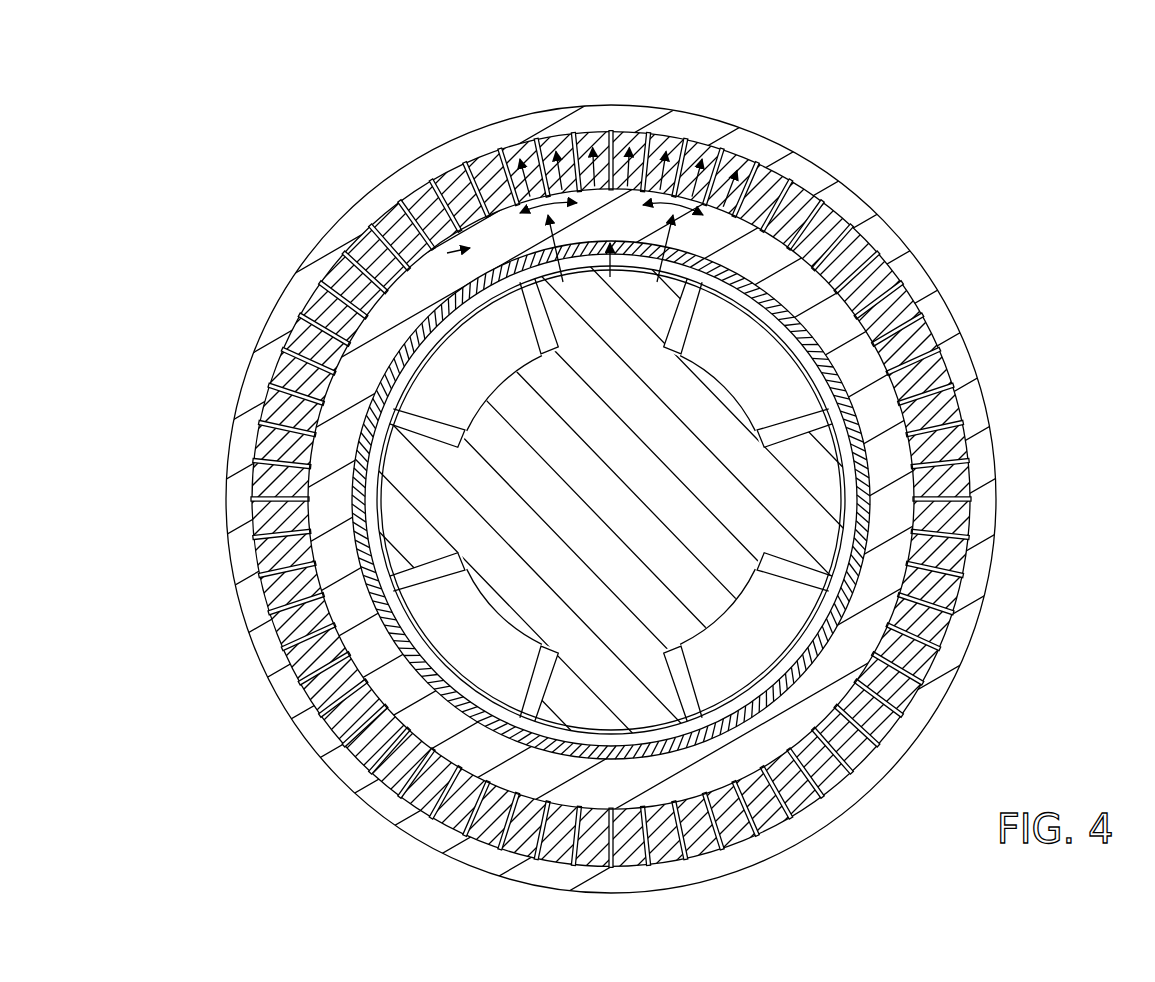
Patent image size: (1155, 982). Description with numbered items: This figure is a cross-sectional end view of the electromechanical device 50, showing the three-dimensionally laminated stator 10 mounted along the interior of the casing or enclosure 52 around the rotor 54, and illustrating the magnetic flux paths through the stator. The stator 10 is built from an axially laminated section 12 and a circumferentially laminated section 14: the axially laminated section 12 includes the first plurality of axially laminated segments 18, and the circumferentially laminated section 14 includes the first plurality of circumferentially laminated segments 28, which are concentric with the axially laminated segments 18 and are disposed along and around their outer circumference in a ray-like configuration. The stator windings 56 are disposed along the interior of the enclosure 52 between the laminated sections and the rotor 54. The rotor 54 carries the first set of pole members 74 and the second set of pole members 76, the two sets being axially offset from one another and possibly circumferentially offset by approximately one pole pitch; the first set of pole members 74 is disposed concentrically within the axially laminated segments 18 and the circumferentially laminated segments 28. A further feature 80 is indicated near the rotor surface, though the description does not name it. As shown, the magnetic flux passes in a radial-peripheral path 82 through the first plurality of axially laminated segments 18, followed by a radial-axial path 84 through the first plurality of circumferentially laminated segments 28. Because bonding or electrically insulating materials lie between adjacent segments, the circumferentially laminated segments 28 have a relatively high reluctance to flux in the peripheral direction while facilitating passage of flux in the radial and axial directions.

The three-dimensionally laminated stator 10 is at (641, 126).
The axially laminated section 12 is at (399, 305).
The circumferentially laminated section 14 is at (572, 130).
The first plurality of axially laminated segments 18 is at (353, 248).
The first plurality of circumferentially laminated segments 28 is at (493, 153).
The electromechanical device 50 is at (1004, 172).
The casing or enclosure 52 is at (850, 822).
The rotor 54 is at (497, 443).
The stator windings 56 is at (869, 520).
The first set of pole members 74 is at (668, 308).
The second set of pole members 76 is at (484, 347).
The rotor outer surface 80 is at (656, 272).
The radial-peripheral path 82 is at (683, 216).
The radial-axial path 84 is at (609, 132).